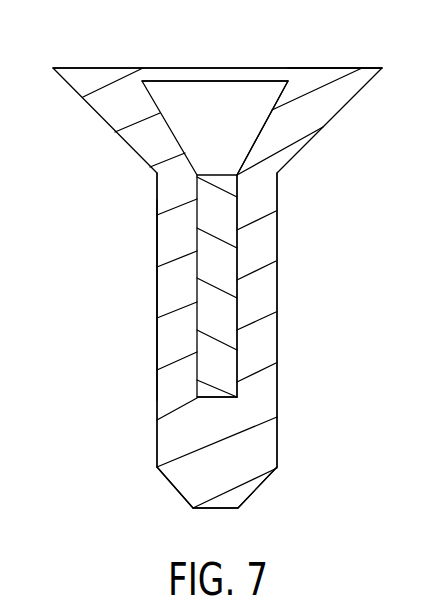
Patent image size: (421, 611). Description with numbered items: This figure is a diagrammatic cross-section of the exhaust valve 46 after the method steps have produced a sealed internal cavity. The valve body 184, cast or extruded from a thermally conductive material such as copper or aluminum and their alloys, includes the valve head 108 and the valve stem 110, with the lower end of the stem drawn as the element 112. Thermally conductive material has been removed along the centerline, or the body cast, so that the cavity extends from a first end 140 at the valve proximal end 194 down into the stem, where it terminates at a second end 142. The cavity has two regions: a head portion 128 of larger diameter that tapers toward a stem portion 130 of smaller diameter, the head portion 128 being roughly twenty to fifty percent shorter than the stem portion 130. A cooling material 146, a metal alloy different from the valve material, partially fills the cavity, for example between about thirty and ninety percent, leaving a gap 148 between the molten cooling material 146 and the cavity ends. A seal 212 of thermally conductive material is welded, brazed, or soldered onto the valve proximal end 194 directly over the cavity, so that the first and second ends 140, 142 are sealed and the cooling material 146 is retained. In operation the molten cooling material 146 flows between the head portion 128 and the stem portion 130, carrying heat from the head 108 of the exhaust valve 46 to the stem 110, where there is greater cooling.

The exhaust valve 46 is at (103, 51).
The valve head 108 is at (103, 123).
The first end 140 is at (167, 79).
The seal 212 is at (222, 72).
The valve proximal end 194 is at (308, 68).
The gap 148 is at (233, 137).
The head portion 128 is at (276, 128).
The valve stem 110 is at (277, 397).
The valve body 184 is at (173, 287).
The cooling material 146 is at (220, 272).
The stem portion 130 is at (248, 246).
The second end 142 is at (237, 398).
The tip 112 is at (240, 509).